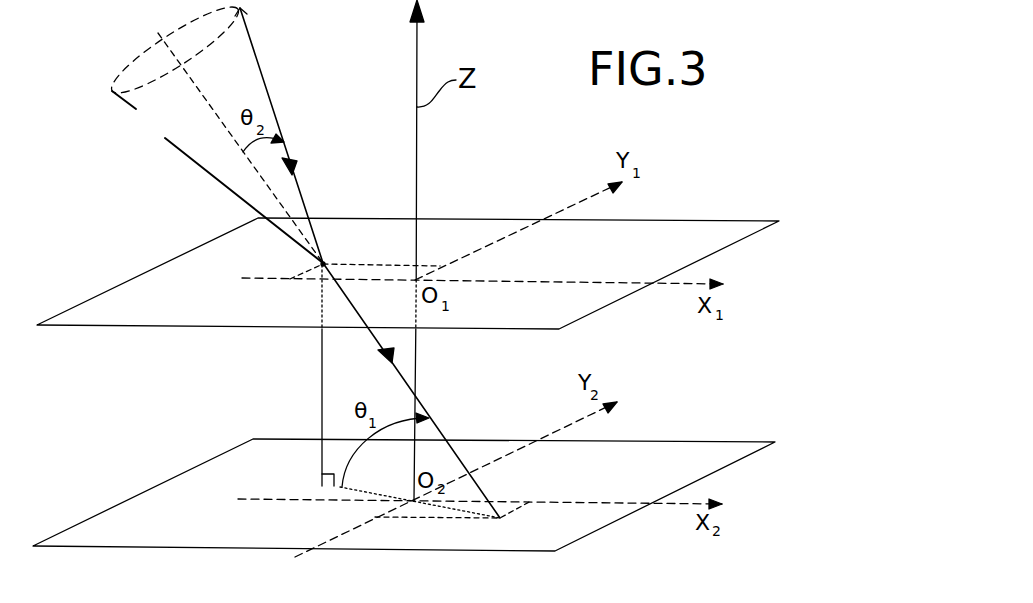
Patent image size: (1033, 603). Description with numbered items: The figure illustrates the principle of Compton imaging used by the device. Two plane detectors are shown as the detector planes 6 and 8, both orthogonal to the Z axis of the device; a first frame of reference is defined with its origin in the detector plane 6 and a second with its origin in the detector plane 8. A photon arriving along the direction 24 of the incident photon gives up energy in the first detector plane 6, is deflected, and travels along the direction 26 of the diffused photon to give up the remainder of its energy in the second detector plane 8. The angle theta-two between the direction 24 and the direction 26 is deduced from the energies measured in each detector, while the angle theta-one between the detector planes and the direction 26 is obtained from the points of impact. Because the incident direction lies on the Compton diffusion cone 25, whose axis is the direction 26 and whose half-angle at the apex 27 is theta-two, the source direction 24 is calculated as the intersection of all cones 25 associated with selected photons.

The detector plane 6 is at (750, 238).
The detector plane 8 is at (758, 452).
The direction of the incident photon 24 is at (260, 72).
The Compton diffusion cone 25 is at (188, 160).
The direction of the diffused photon 26 is at (190, 77).
The apex of the cone 27 is at (324, 263).